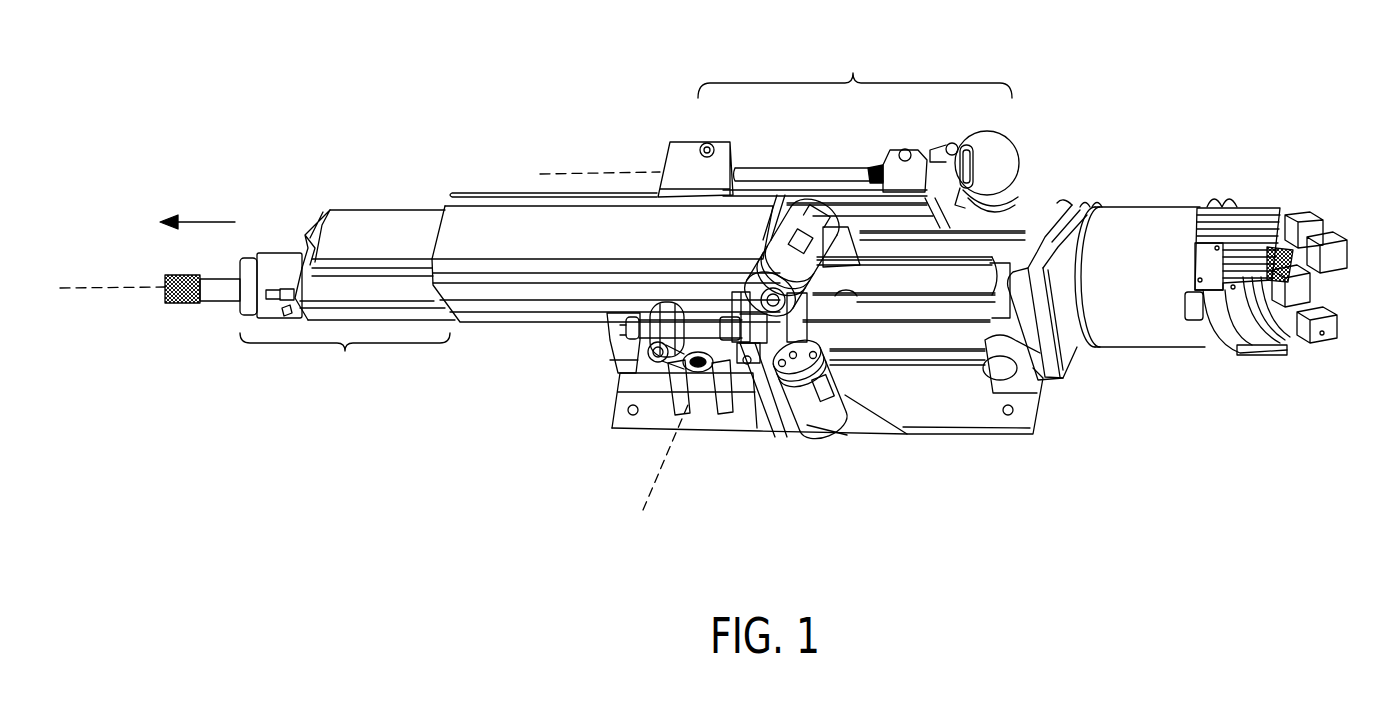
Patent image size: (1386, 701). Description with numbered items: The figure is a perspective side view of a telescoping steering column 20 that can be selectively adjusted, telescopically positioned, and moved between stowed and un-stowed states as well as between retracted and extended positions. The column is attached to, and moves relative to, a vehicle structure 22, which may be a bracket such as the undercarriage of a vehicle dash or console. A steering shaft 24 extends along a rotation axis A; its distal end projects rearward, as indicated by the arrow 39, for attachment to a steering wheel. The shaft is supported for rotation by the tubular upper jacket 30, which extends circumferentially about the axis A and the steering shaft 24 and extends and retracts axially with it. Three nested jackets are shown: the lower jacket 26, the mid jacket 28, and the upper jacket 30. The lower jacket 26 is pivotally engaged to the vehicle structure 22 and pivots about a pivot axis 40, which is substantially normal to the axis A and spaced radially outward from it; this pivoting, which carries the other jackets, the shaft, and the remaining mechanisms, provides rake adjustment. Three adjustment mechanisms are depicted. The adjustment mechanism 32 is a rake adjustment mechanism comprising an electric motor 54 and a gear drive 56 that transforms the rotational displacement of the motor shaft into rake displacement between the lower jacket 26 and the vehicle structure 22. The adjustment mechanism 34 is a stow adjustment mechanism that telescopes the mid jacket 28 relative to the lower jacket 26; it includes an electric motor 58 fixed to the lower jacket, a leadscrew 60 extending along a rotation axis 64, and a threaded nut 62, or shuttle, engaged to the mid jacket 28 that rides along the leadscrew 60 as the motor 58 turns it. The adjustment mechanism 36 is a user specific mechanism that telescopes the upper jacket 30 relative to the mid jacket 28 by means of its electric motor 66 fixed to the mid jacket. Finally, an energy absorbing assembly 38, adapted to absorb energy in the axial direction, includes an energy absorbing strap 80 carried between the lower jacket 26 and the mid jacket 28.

The telescoping steering column 20 is at (421, 499).
The vehicle structure 22 is at (734, 437).
The steering shaft 24 is at (200, 304).
The lower jacket 26 is at (612, 357).
The mid jacket 28 is at (527, 326).
The upper jacket 30 is at (347, 298).
The adjustment mechanism 32 is at (827, 440).
The adjustment mechanism 34 is at (872, 123).
The adjustment mechanism 36 is at (764, 243).
The energy absorbing assembly 38 is at (878, 173).
The arrow 39 is at (214, 222).
The pivot axis 40 is at (650, 480).
The electric motor 54 is at (836, 424).
The gear drive 56 is at (717, 327).
The electric motor 58 is at (1028, 188).
The leadscrew 60 is at (836, 167).
The threaded nut 62 is at (737, 166).
The rotation axis 64 is at (628, 170).
The electric motor 66 is at (770, 437).
The energy absorbing strap 80 is at (933, 212).
The rotation axis A is at (145, 286).